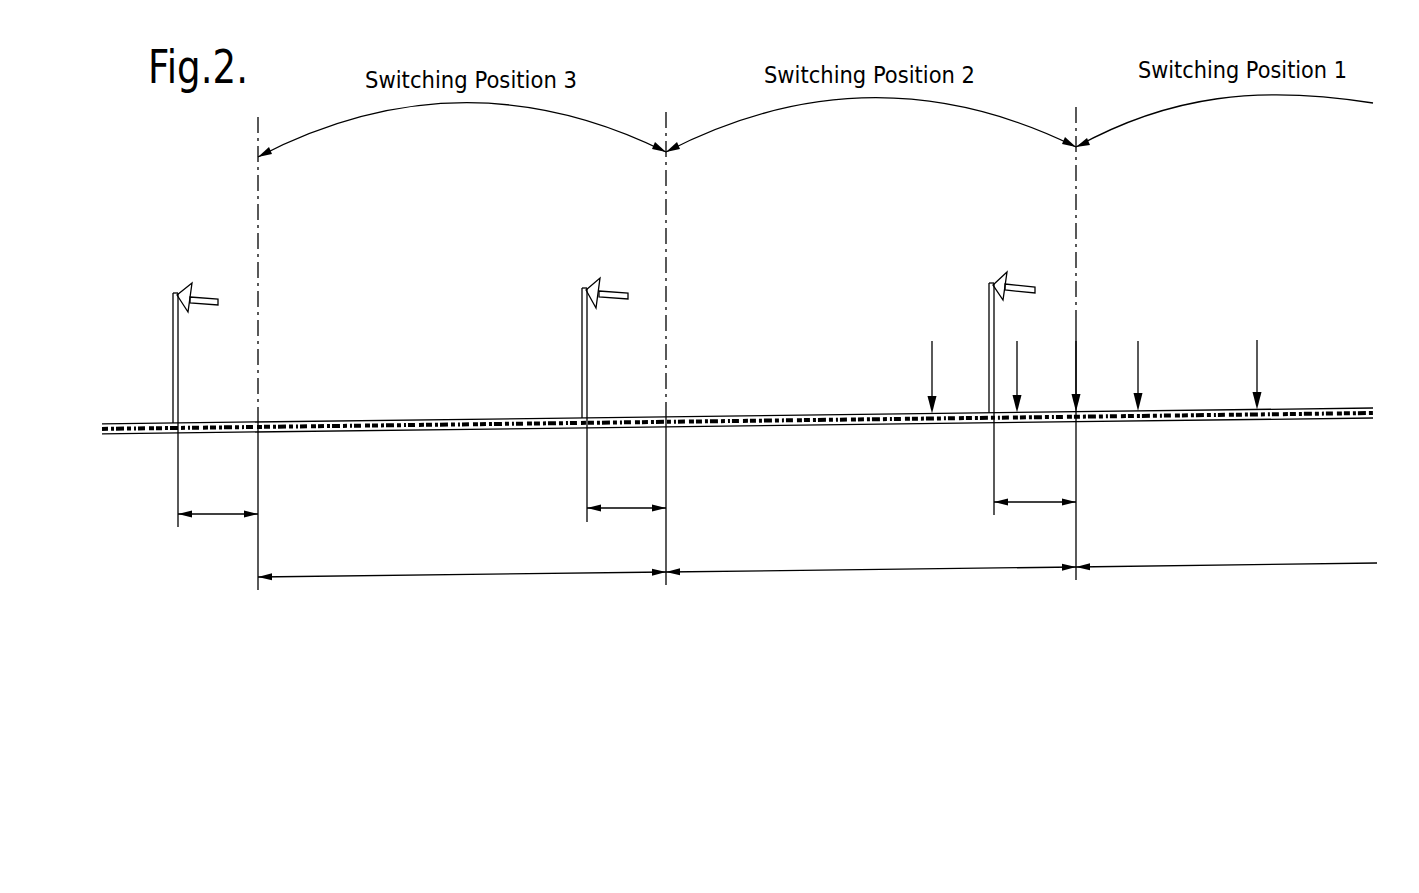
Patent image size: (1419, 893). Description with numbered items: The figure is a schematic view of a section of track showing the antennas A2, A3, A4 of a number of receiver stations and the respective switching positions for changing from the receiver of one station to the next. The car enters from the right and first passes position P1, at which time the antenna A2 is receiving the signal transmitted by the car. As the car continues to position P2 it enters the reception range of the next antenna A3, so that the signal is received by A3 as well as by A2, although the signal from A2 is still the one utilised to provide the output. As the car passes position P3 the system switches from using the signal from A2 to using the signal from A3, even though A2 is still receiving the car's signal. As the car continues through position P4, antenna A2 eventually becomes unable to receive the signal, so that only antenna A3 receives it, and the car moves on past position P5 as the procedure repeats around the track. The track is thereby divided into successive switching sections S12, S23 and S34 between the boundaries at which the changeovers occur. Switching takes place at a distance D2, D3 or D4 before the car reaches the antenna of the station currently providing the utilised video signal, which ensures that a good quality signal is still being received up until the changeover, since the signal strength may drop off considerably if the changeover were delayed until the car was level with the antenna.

The antenna A4 is at (165, 336).
The antenna A3 is at (573, 330).
The antenna A2 is at (979, 324).
The position P5 is at (934, 363).
The position P4 is at (1019, 363).
The position P3 is at (1089, 361).
The position P2 is at (1142, 361).
The position P1 is at (1257, 360).
The distance D4 is at (218, 499).
The distance D3 is at (626, 493).
The distance D2 is at (1035, 488).
The switching section S34 is at (462, 560).
The switching section S23 is at (871, 555).
The switching section S12 is at (1226, 550).